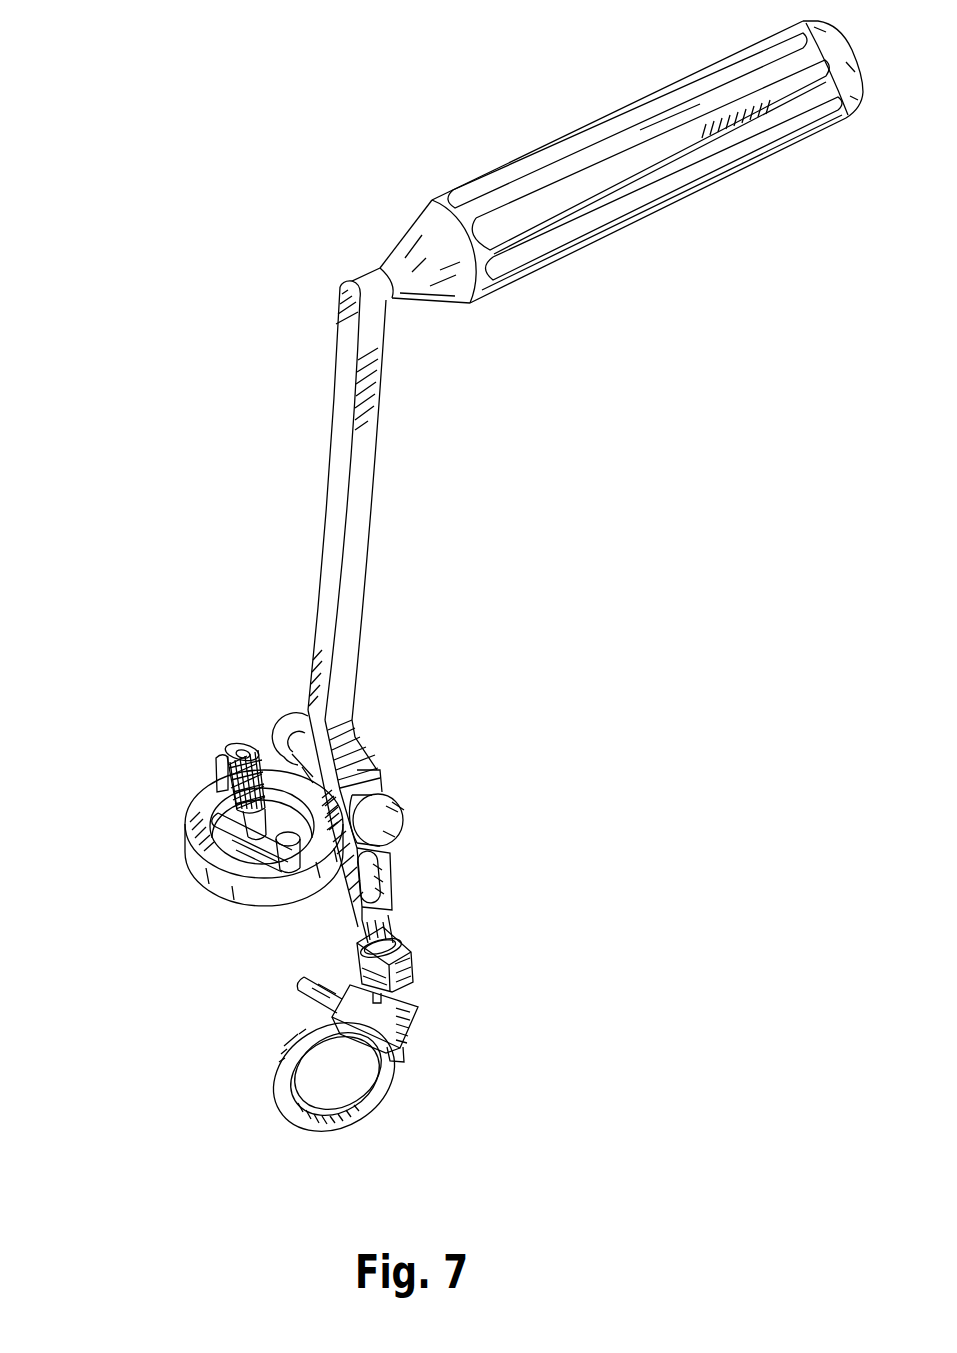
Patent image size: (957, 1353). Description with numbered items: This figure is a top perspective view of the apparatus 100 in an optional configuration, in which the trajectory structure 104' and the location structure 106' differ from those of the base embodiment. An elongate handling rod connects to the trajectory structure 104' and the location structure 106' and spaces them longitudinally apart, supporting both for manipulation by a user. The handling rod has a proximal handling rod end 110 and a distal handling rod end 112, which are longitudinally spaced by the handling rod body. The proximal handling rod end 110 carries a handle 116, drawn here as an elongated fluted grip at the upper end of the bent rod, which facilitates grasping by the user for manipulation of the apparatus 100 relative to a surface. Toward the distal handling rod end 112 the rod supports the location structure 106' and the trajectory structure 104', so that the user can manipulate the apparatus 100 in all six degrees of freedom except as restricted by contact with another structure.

The apparatus 100 is at (453, 604).
The proximal handling rod end 110 is at (430, 413).
The handle 116 is at (553, 158).
The distal handling rod end 112 is at (440, 948).
The location structure 106' is at (193, 842).
The trajectory structure 104' is at (365, 1094).